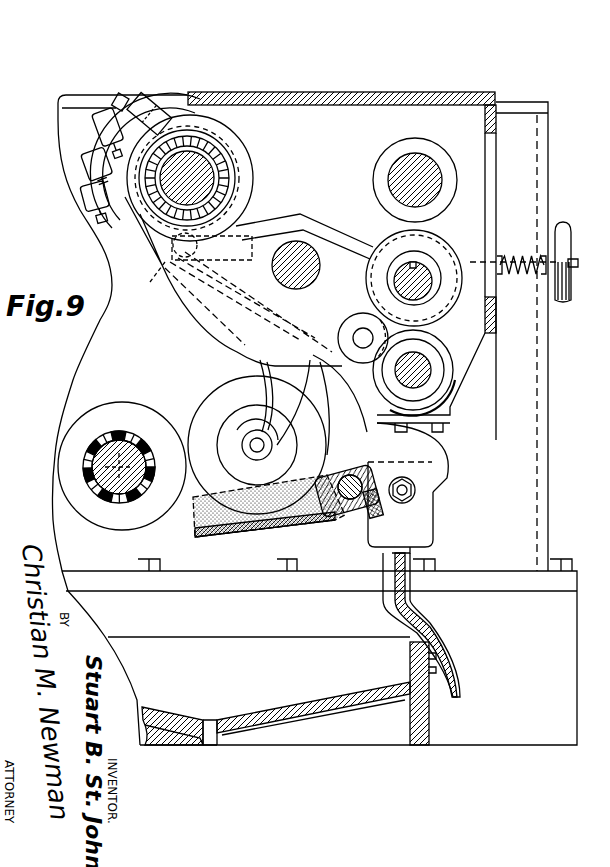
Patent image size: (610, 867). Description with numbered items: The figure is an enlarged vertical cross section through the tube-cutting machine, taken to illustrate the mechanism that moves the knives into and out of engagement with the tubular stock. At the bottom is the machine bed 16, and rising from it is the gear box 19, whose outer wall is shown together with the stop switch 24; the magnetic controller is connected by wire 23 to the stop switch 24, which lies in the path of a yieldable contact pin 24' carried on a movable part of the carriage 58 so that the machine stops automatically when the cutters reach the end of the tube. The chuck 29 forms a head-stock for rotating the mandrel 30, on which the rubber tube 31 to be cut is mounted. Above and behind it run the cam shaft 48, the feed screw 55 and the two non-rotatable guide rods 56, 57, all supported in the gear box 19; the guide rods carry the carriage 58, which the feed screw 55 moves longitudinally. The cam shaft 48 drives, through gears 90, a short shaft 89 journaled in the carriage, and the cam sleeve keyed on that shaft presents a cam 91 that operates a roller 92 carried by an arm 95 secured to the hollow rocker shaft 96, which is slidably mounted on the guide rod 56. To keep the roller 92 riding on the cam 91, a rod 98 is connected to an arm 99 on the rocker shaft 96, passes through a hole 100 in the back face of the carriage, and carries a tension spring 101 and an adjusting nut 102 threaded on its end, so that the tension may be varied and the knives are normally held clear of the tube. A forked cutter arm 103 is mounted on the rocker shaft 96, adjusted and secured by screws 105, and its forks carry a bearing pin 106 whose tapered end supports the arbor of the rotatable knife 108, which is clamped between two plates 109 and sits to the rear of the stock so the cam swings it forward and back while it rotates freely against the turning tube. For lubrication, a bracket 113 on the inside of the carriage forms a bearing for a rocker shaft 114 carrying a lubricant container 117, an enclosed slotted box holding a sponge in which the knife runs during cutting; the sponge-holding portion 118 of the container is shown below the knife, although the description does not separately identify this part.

The machine bed 16 is at (329, 670).
The gear box 19 is at (532, 165).
The wire 23 is at (449, 640).
The stop switch 24 is at (424, 507).
The yieldable contact pin 24' is at (438, 490).
The chuck 29 is at (150, 520).
The mandrel 30 is at (140, 440).
The rubber tube 31 is at (100, 437).
The cam shaft 48 is at (436, 372).
The feed screw 55 is at (321, 266).
The guide rod 56 is at (199, 174).
The guide rod 57 is at (424, 165).
The carriage 58 is at (494, 98).
The short shaft 89 is at (431, 300).
The gears 90 is at (456, 350).
The cam 91 is at (441, 242).
The roller 92 is at (358, 312).
The arm 95 is at (249, 331).
The hollow rocker shaft 96 is at (230, 176).
The rod 98 is at (332, 237).
The arm 99 is at (163, 265).
The hole 100 is at (498, 290).
The tension spring 101 is at (524, 254).
The nut 102 is at (570, 240).
The forked cutter arm 103 is at (261, 366).
The screw 105 is at (123, 100).
The bearing pin 106 is at (190, 452).
The rotatable knife 108 is at (211, 391).
The plate 109 is at (241, 425).
The bracket 113 is at (446, 451).
The rocker shaft 114 is at (350, 474).
The lubricant container 117 is at (328, 510).
The wedge 118 is at (200, 523).